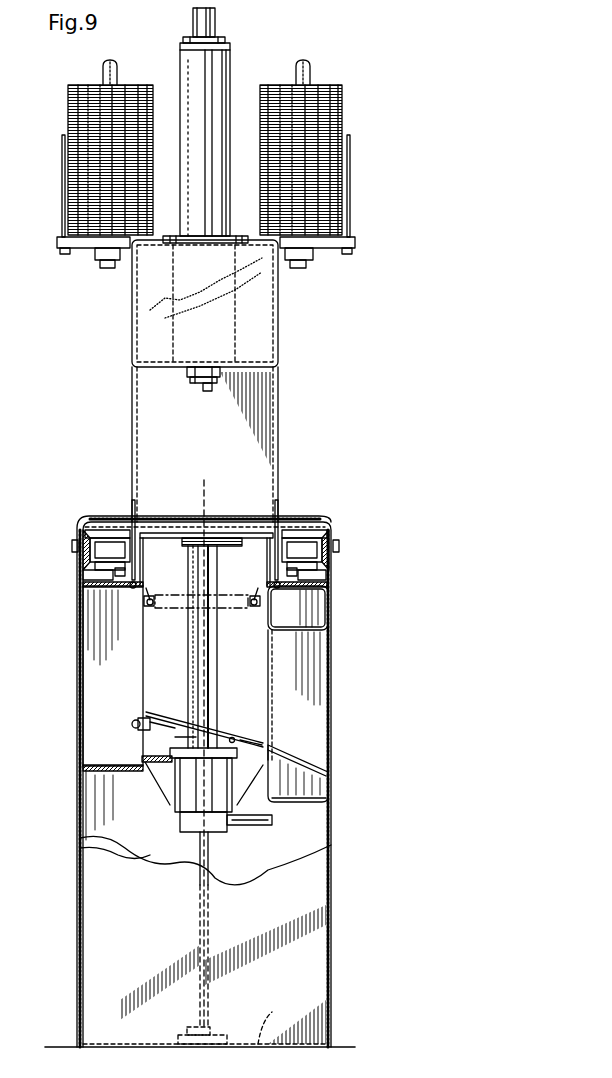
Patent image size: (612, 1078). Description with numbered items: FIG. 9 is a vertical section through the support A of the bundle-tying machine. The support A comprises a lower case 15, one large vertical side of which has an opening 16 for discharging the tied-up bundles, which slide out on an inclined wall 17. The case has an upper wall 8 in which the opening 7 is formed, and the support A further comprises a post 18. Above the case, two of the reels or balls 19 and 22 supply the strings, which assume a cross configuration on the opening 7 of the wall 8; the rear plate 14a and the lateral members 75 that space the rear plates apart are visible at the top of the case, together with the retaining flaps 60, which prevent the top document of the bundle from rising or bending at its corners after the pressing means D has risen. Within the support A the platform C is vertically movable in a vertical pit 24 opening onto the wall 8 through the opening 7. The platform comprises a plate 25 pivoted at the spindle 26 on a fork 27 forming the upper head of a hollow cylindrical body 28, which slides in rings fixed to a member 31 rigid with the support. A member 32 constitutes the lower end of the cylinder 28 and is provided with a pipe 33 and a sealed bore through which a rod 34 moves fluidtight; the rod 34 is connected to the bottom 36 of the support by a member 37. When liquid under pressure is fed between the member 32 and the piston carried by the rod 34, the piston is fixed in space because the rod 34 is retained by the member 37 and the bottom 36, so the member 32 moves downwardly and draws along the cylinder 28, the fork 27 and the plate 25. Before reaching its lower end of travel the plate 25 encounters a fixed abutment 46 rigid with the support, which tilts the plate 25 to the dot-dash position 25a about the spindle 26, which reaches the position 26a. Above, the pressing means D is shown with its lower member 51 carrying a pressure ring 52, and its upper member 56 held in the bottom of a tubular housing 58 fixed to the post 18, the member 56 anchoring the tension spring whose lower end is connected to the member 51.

The opening 7 is at (102, 528).
The upper wall 8 is at (320, 526).
The rear plate 14a is at (165, 558).
The lower case 15 is at (333, 825).
The opening 16 is at (305, 690).
The inclined wall 17 is at (306, 755).
The post 18 is at (280, 368).
The reel 19 is at (78, 112).
The right coil 22 is at (324, 107).
The vertical pit 24 is at (140, 664).
The plate 25 is at (257, 534).
The tilted plate position 25a is at (166, 722).
The spindle 26 is at (256, 598).
The spindle position 26a is at (248, 730).
The fork 27 is at (238, 533).
The hollow cylindrical body 28 is at (220, 632).
The member 31 is at (146, 746).
The member 32 is at (190, 822).
The pipe 33 is at (245, 828).
The rod 34 is at (200, 862).
The bottom 36 is at (262, 1030).
The member 37 is at (213, 1034).
The fixed abutment 46 is at (140, 712).
The lower member 51 is at (197, 374).
The pressure ring 52 is at (208, 390).
The member 56 is at (210, 22).
The tubular housing 58 is at (190, 70).
The retaining flaps 60 is at (128, 526).
The lateral member 75 is at (105, 548).
The support A is at (335, 650).
The platform C is at (187, 532).
The pressing means D is at (233, 58).